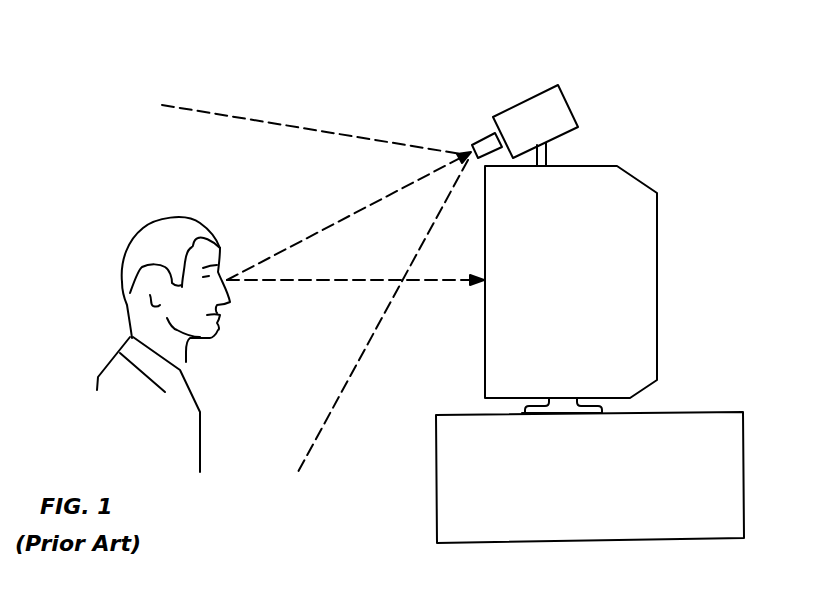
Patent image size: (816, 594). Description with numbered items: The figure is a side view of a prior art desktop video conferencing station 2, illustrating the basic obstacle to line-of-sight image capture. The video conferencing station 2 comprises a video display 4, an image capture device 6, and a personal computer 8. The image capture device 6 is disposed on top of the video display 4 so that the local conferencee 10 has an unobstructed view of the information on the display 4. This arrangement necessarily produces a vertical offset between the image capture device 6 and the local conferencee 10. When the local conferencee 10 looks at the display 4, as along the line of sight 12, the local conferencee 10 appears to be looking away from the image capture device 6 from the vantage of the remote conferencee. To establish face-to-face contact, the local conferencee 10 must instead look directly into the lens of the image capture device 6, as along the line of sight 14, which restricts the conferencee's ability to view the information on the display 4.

The desktop video conferencing station 2 is at (684, 76).
The video display 4 is at (638, 178).
The image capture device 6 is at (532, 95).
The personal computer 8 is at (743, 448).
The local conferencee 10 is at (136, 238).
The line of sight to the display 12 is at (287, 283).
The line of sight to the image capture device 14 is at (328, 225).